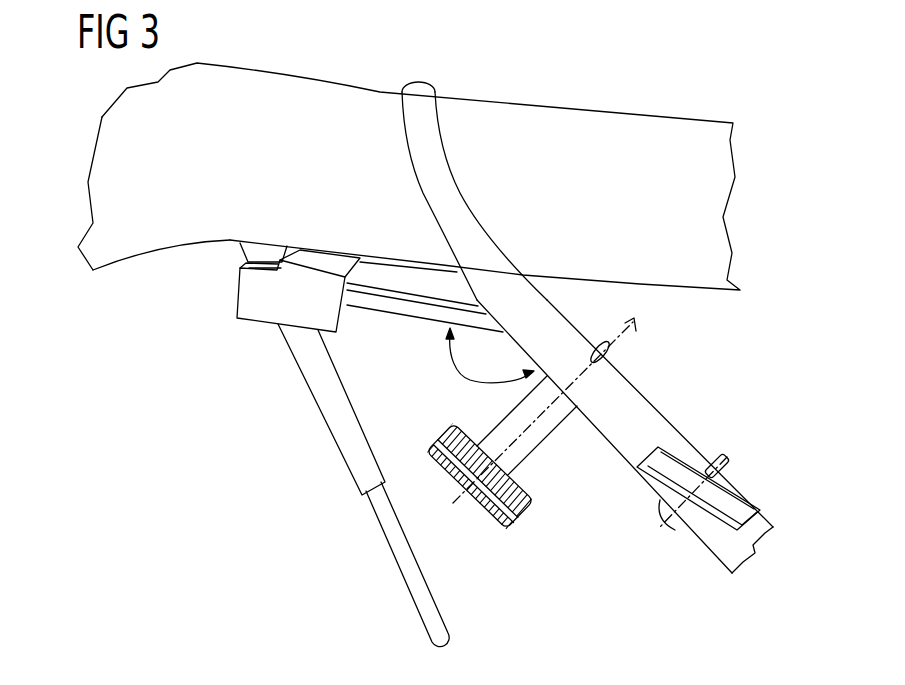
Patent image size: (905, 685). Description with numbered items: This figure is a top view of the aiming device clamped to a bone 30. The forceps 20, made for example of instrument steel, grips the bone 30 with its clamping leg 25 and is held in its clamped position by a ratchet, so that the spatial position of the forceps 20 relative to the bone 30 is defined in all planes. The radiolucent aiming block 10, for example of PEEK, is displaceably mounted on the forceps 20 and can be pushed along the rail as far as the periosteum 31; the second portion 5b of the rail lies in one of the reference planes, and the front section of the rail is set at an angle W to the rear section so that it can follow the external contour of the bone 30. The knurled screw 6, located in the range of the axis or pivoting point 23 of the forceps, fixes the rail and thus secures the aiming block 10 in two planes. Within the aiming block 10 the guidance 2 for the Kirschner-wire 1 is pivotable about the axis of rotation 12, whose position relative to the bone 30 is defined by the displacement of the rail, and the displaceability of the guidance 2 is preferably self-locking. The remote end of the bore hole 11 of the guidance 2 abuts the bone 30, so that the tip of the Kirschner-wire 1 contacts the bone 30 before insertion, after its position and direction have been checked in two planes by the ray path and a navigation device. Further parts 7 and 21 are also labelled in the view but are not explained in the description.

The Kirschner-wire 1 is at (397, 543).
The guidance 2 is at (325, 388).
The second portion of the rail 5b is at (398, 308).
The knurled screw 6 is at (479, 503).
The fastening strip 7 is at (363, 277).
The aiming block 10 is at (256, 308).
The bore hole 11 is at (260, 242).
The axis of rotation 12 is at (270, 285).
The forceps 20 is at (681, 429).
The pin in hose window 21 is at (712, 481).
The axis of the forceps 23 is at (630, 332).
The clamping leg 25 is at (442, 179).
The bone 30 is at (123, 213).
The periosteum 31 is at (200, 249).
The angle W is at (467, 380).